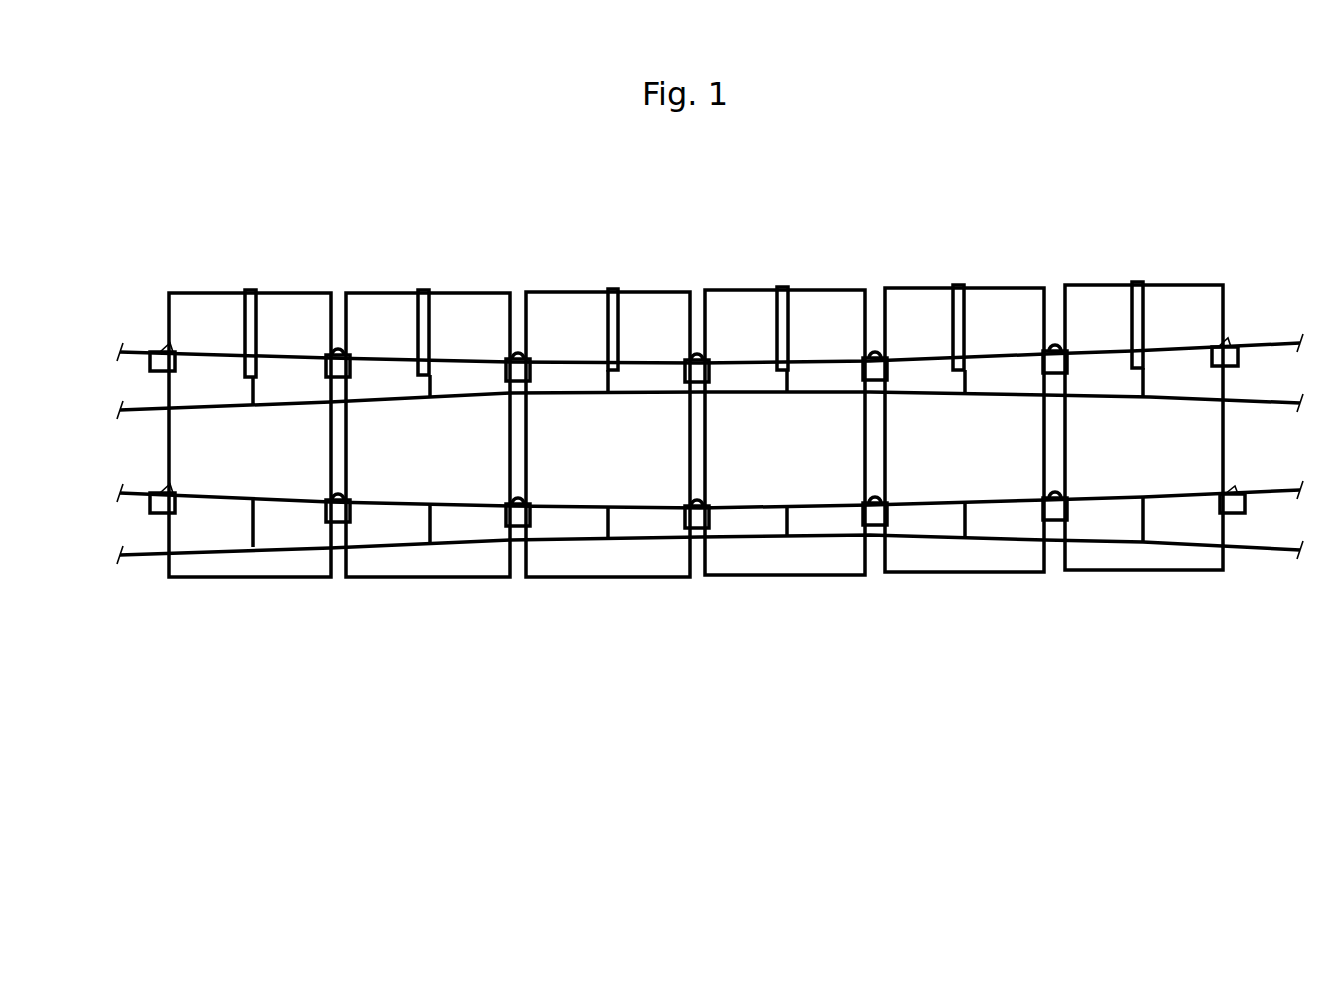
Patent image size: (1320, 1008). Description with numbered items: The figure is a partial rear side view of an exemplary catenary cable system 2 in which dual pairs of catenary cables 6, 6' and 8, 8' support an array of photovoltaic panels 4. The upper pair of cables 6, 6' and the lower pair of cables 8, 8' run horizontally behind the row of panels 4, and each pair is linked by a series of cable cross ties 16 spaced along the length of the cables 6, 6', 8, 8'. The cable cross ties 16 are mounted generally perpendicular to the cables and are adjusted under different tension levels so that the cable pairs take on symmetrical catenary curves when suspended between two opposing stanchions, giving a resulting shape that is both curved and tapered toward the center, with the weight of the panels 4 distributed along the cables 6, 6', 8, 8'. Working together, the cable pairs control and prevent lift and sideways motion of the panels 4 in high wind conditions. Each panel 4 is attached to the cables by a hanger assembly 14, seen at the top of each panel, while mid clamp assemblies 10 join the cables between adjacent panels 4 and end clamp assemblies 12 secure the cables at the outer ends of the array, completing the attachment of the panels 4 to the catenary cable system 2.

The catenary cable system 2 is at (541, 731).
The photovoltaic panels 4 is at (252, 577).
The catenary cable 6 is at (710, 328).
The catenary cable 6' is at (710, 434).
The catenary cable 8 is at (710, 470).
The catenary cable 8' is at (710, 581).
The mid clamp assemblies 10 is at (351, 357).
The end clamp assemblies 12 is at (151, 364).
The hanger assembly 14 is at (251, 290).
The cable cross ties 16 is at (240, 392).